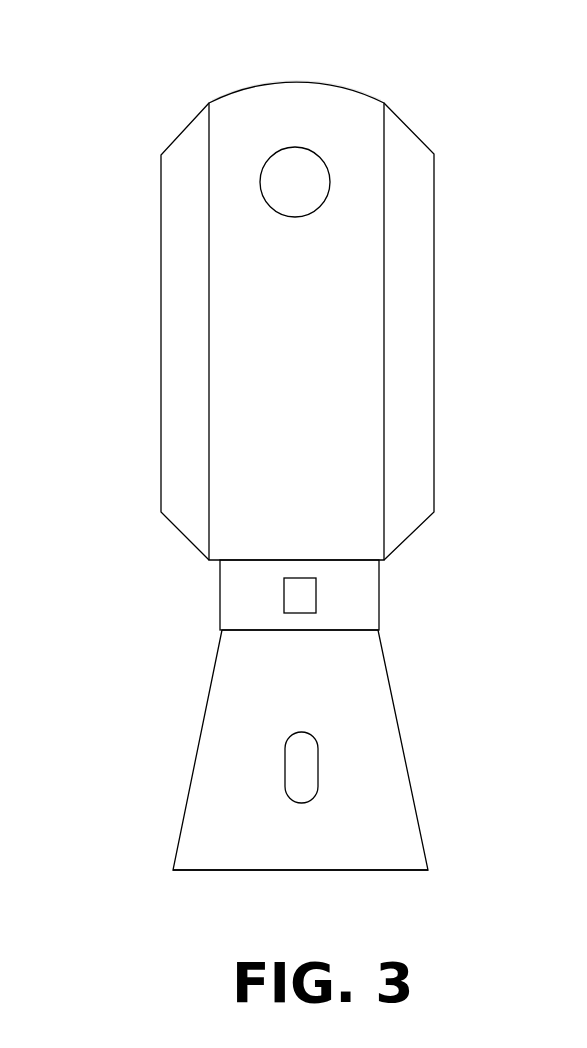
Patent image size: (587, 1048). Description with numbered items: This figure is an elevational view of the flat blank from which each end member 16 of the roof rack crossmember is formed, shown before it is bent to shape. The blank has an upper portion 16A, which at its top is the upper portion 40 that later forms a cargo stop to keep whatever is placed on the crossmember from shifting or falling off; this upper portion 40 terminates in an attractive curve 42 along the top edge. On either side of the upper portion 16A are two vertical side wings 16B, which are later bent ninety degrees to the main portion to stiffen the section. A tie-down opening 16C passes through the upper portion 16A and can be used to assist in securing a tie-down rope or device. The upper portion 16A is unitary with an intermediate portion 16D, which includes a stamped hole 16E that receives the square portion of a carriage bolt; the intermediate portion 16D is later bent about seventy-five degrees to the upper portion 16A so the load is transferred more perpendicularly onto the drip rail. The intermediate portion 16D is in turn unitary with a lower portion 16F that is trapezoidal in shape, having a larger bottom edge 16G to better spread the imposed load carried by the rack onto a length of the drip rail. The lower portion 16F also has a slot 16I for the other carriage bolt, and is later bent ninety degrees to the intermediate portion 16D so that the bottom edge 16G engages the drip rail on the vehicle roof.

The end member 16 is at (301, 464).
The upper portion 16A is at (322, 323).
The vertical side wing 16B is at (172, 340).
The tie-down opening 16C is at (325, 170).
The intermediate portion 16D is at (232, 607).
The stamped hole 16E is at (313, 593).
The lower portion 16F is at (267, 840).
The bottom edge 16G is at (302, 870).
The slot 16I is at (283, 763).
The upper portion 40 is at (295, 160).
The attractive curve 42 is at (293, 82).